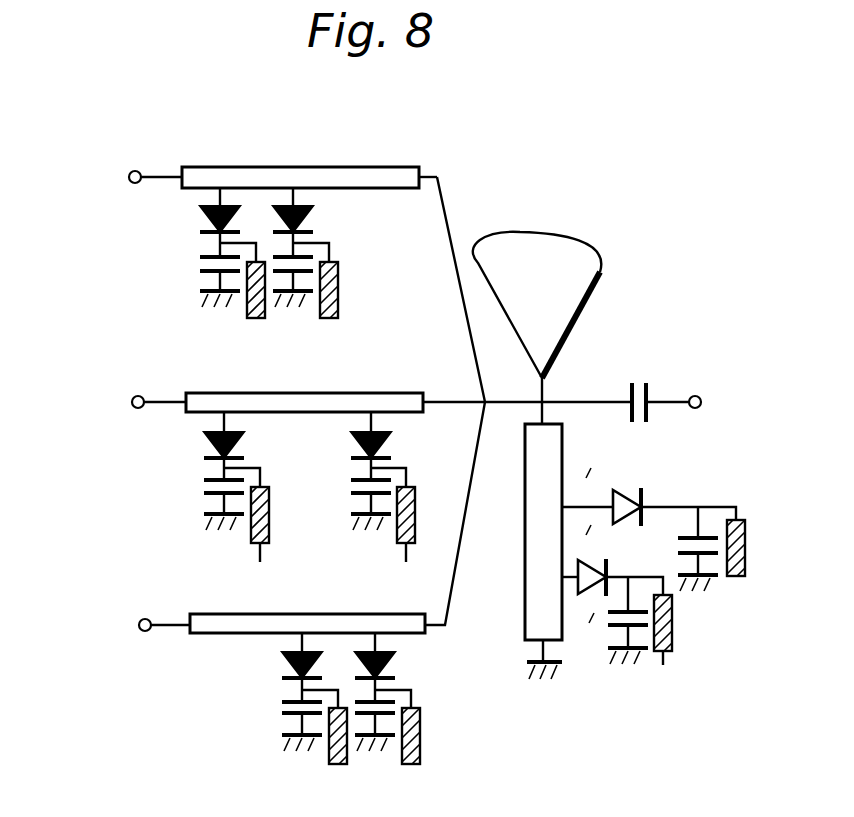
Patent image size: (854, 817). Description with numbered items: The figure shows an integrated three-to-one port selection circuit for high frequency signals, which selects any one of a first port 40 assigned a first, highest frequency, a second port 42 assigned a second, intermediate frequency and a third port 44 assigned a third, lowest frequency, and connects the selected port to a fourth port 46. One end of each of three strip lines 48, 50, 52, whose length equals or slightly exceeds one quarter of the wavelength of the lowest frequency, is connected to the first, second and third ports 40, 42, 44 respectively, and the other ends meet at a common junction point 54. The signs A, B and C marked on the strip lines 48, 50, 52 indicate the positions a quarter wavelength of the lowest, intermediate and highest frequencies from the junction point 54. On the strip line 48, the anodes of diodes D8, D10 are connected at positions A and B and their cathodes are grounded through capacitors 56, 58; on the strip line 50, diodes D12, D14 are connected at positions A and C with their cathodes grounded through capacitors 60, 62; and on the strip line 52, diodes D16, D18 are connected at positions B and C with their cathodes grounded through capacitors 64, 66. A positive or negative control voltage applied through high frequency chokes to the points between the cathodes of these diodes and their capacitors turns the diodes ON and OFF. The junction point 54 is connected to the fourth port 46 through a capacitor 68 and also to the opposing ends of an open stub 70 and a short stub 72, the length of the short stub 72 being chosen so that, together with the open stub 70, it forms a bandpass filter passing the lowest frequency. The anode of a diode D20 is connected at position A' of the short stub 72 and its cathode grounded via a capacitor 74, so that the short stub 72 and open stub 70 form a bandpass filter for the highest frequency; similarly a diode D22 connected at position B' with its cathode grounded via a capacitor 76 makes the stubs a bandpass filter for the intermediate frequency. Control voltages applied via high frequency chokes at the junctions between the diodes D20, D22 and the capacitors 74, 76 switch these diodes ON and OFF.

The first port 40 is at (129, 178).
The second port 42 is at (132, 405).
The third port 44 is at (139, 624).
The fourth port 46 is at (693, 387).
The strip line 48 is at (323, 173).
The strip line 50 is at (328, 392).
The strip line 52 is at (327, 620).
The junction point 54 is at (485, 400).
The capacitor 56 is at (200, 265).
The capacitor 58 is at (297, 263).
The capacitor 60 is at (202, 483).
The capacitor 62 is at (352, 483).
The capacitor 64 is at (282, 708).
The capacitor 66 is at (387, 707).
The capacitor 68 is at (638, 383).
The open stub 70 is at (592, 275).
The short stub 72 is at (528, 538).
The capacitor 74 is at (677, 543).
The capacitor 76 is at (610, 615).
The diode D8 is at (200, 217).
The diode D10 is at (312, 217).
The diode D12 is at (240, 443).
The diode D14 is at (390, 443).
The diode D16 is at (283, 662).
The diode D18 is at (397, 663).
The diode D20 is at (625, 488).
The diode D22 is at (597, 562).